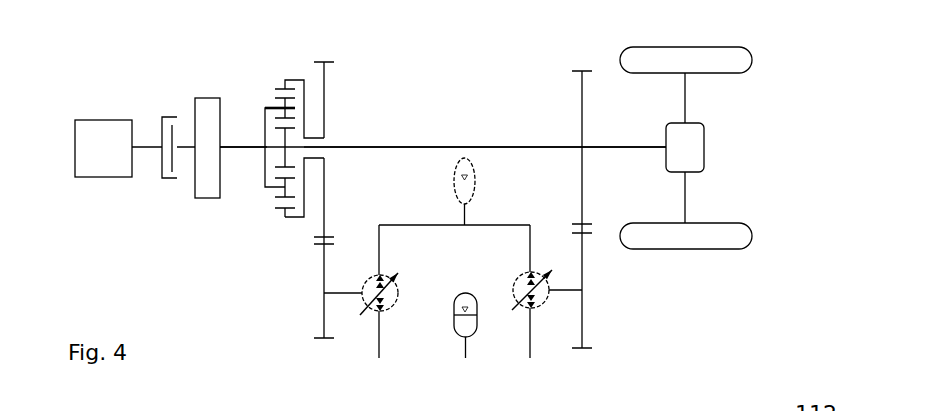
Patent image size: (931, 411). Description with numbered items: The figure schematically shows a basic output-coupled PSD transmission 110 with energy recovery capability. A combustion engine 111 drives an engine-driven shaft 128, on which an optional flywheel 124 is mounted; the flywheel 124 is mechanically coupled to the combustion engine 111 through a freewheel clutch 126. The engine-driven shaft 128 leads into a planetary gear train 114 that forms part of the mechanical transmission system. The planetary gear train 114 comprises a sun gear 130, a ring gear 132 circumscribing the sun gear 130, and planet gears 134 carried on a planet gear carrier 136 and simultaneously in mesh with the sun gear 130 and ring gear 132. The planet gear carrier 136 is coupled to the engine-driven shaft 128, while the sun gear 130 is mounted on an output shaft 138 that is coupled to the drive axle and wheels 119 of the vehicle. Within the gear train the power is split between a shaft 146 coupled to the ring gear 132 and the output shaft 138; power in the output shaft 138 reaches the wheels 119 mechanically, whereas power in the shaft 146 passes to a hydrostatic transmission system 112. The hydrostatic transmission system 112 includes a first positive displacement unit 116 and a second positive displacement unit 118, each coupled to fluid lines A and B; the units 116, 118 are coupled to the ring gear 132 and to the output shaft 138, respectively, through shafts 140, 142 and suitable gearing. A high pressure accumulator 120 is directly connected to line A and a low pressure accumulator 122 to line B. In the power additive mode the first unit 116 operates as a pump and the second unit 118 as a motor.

The output-coupled PSD transmission 110 is at (142, 53).
The combustion engine 111 is at (86, 172).
The hydrostatic transmission system 112 is at (370, 372).
The planetary gear train 114 is at (357, 100).
The first positive displacement unit 116 is at (375, 274).
The second positive displacement unit 118 is at (537, 307).
The drive axle and wheels 119 is at (752, 132).
The high pressure accumulator 120 is at (475, 178).
The low pressure accumulator 122 is at (463, 292).
The flywheel 124 is at (195, 198).
The freewheel clutch 126 is at (162, 178).
The engine-driven shaft 128 is at (247, 147).
The sun gear 130 is at (285, 148).
The ring gear 132 is at (297, 220).
The planet gears 134 is at (285, 185).
The planet gear carrier 136 is at (267, 108).
The output shaft 138 is at (510, 147).
The shaft 140 is at (335, 295).
The shaft 142 is at (557, 292).
The shaft 146 is at (315, 158).